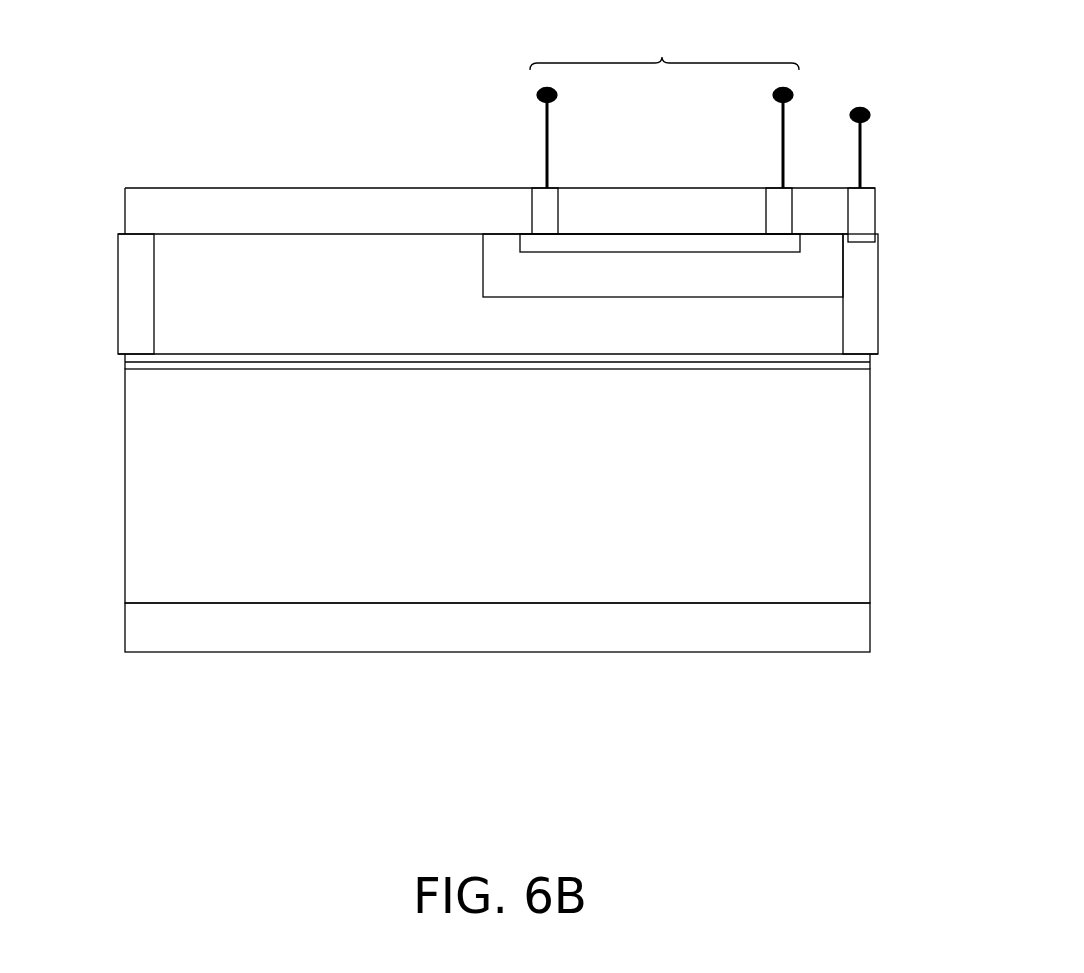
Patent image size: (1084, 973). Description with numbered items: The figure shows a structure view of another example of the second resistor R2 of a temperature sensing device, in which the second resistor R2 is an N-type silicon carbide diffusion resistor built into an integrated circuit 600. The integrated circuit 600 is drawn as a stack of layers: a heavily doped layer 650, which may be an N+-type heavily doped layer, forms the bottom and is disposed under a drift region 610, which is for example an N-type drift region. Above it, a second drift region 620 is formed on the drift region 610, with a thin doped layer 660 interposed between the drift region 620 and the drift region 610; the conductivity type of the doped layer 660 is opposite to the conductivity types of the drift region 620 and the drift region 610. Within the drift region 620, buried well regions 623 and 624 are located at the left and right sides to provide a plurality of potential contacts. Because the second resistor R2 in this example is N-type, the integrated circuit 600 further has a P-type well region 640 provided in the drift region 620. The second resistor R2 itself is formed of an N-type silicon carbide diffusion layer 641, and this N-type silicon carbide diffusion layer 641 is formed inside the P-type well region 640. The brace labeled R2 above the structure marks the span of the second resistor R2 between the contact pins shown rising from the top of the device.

The integrated circuit 600 is at (913, 743).
The drift region 610 is at (846, 518).
The drift region 620 is at (315, 275).
The buried well region 623 is at (138, 322).
The buried well region 624 is at (863, 323).
The P-type well region 640 is at (503, 267).
The N-type silicon carbide diffusion layer 641 is at (682, 245).
The heavily doped layer 650 is at (176, 631).
The doped layer 660 is at (176, 362).
The second resistor R2 is at (664, 44).